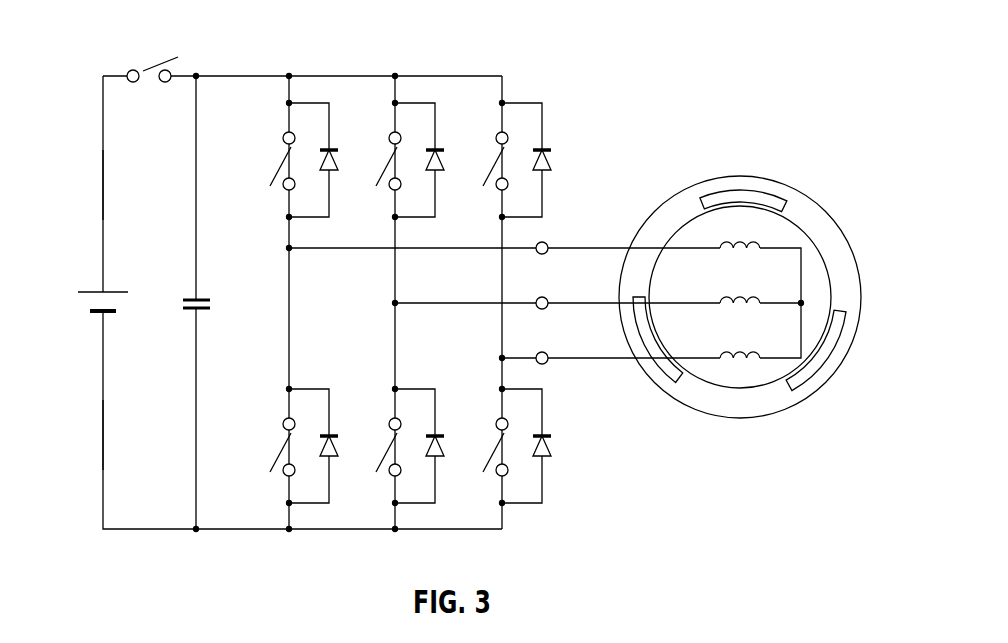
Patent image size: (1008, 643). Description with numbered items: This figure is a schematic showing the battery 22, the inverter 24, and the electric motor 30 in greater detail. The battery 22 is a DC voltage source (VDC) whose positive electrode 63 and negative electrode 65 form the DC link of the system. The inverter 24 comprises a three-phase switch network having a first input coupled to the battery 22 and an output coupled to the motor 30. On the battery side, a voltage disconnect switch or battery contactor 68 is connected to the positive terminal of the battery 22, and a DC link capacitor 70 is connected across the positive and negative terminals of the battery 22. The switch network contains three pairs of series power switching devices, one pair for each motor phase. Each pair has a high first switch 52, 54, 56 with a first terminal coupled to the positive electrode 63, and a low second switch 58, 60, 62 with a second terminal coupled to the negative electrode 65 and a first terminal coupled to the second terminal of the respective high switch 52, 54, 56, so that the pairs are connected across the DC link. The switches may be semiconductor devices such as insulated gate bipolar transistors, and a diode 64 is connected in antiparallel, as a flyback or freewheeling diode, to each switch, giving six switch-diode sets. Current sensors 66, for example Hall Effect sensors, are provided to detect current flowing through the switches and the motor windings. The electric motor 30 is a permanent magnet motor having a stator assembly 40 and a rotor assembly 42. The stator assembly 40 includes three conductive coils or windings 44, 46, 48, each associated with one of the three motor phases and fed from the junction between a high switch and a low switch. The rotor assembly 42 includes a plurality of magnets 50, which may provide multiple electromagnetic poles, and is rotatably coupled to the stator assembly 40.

The battery 22 is at (95, 313).
The inverter 24 is at (441, 284).
The electric motor 30 is at (705, 285).
The stator assembly 40 is at (740, 176).
The rotor assembly 42 is at (740, 391).
The winding 44 is at (741, 252).
The winding 46 is at (727, 291).
The winding 48 is at (727, 346).
The magnets 50 is at (672, 378).
The first switch 52 is at (280, 162).
The first switch 54 is at (386, 162).
The first switch 56 is at (493, 162).
The second switch 58 is at (280, 448).
The second switch 60 is at (386, 448).
The second switch 62 is at (493, 448).
The positive electrode 63 is at (104, 186).
The diode 64 is at (338, 166).
The negative electrode 65 is at (104, 420).
The current sensors 66 is at (545, 254).
The voltage disconnect switch 68 is at (150, 79).
The DC link capacitor 70 is at (201, 298).